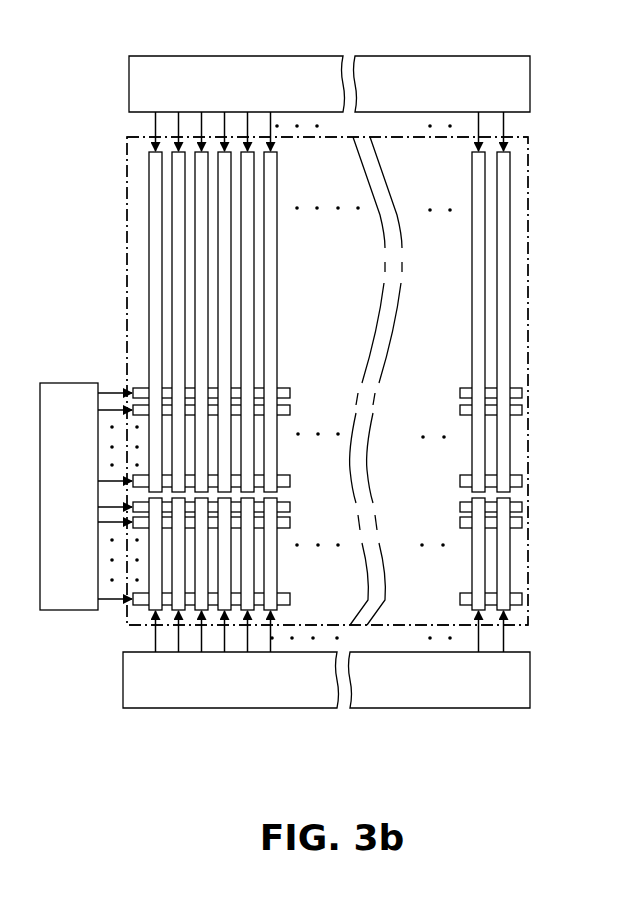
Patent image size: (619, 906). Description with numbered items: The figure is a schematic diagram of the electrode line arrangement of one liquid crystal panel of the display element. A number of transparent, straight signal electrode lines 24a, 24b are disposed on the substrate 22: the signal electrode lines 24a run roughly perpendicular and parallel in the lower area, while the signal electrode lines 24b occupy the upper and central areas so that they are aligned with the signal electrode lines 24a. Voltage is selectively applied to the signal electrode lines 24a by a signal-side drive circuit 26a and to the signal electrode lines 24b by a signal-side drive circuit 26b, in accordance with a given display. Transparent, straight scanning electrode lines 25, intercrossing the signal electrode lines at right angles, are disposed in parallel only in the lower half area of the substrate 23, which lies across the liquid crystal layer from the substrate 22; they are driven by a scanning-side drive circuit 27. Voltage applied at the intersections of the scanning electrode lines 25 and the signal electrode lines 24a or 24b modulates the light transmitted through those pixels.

The substrate 22 is at (528, 312).
The substrate 23 is at (528, 312).
The signal electrode lines 24a is at (277, 574).
The signal electrode lines 24b is at (277, 262).
The scanning electrode lines 25 is at (133, 392).
The signal-side drive circuit 26a is at (219, 708).
The signal-side drive circuit 26b is at (213, 56).
The scanning-side drive circuit 27 is at (67, 611).